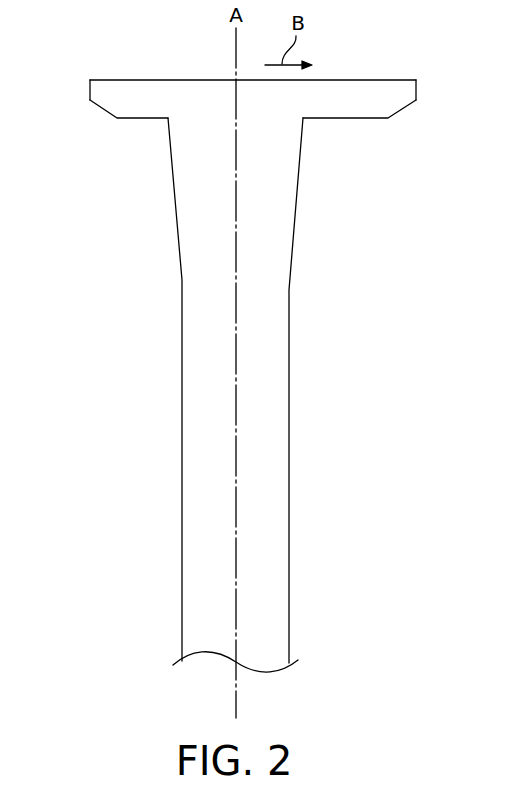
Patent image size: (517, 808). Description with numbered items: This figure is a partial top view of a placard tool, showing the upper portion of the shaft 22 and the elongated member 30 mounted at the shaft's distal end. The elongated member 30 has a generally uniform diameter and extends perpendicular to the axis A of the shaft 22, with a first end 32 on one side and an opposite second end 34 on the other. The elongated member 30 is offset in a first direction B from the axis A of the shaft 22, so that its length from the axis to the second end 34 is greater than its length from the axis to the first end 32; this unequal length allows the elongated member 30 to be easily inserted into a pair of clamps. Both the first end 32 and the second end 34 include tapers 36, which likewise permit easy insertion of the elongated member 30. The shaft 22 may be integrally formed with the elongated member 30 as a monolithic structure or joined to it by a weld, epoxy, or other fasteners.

The shaft 22 is at (288, 344).
The elongated member 30 is at (135, 80).
The first end 32 is at (97, 92).
The second end 34 is at (408, 90).
The tapers 36 is at (103, 116).